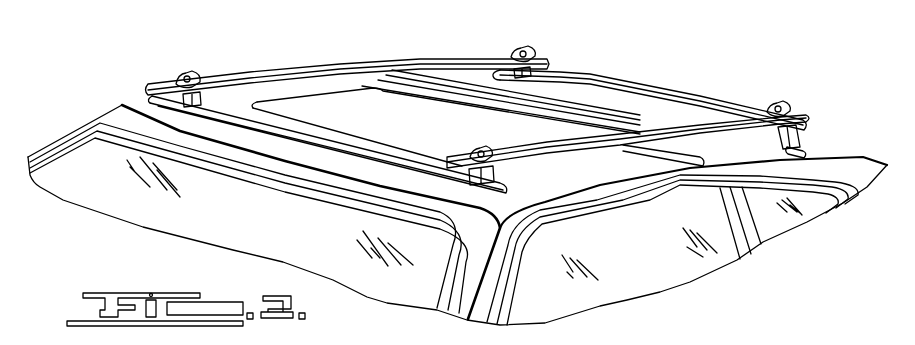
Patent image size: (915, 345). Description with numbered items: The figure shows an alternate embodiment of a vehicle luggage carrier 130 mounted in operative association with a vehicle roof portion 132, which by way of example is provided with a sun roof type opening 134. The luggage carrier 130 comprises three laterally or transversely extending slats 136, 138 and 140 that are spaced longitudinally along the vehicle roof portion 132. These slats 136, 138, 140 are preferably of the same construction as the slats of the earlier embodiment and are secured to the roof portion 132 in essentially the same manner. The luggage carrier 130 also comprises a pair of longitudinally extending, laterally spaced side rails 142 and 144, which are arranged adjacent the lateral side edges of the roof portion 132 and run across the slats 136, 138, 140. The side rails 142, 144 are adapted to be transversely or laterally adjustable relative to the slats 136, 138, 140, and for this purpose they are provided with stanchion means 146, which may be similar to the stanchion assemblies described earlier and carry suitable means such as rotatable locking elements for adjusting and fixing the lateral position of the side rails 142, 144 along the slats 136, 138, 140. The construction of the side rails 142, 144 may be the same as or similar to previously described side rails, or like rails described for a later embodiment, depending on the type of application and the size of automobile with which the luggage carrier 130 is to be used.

The vehicle luggage carrier 130 is at (504, 126).
The vehicle roof portion 132 is at (805, 150).
The sun roof type opening 134 is at (289, 96).
The slat 136 is at (351, 152).
The slat 138 is at (463, 103).
The slat 140 is at (683, 101).
The side rail 142 is at (607, 152).
The side rail 144 is at (397, 55).
The stanchion means 146 is at (207, 98).